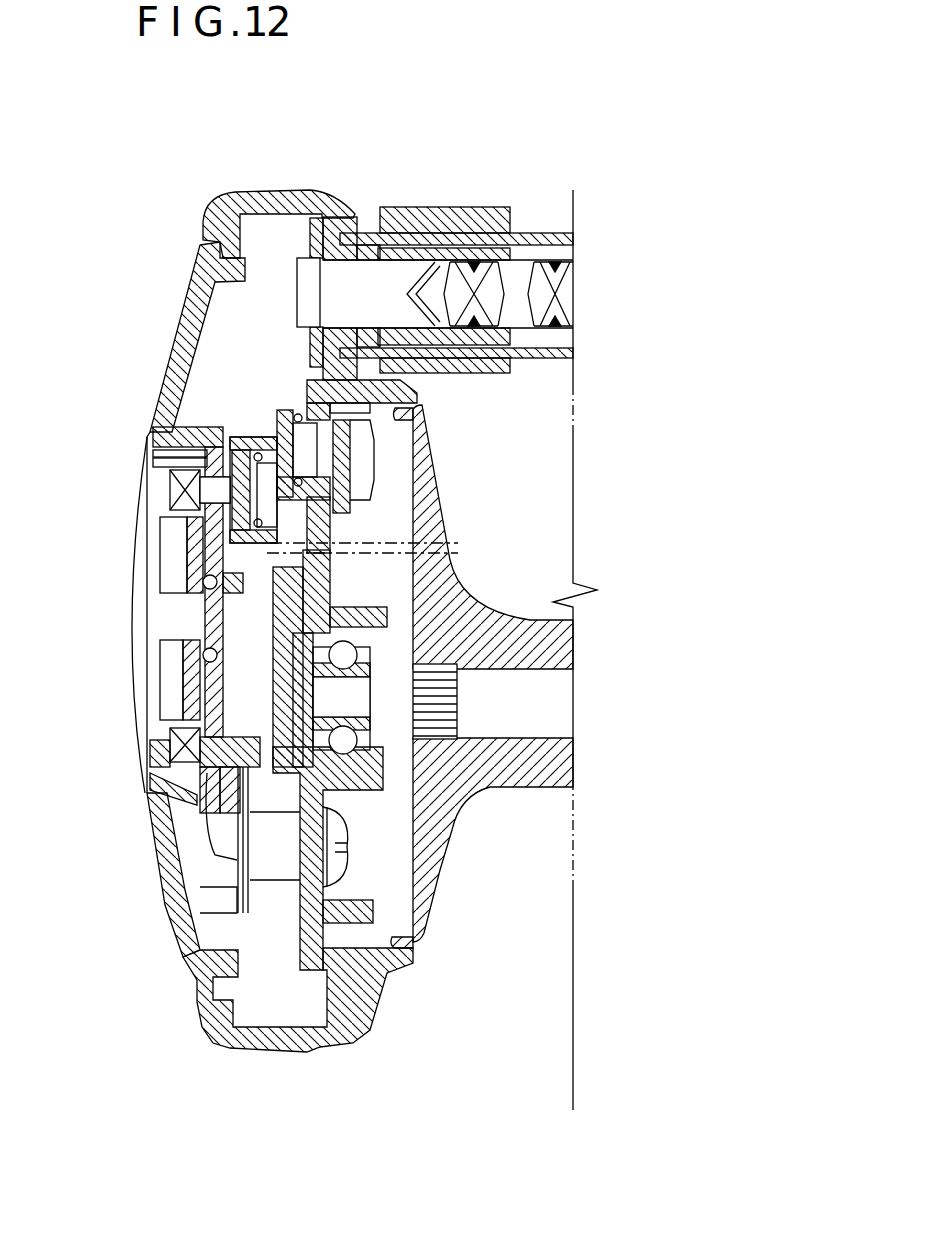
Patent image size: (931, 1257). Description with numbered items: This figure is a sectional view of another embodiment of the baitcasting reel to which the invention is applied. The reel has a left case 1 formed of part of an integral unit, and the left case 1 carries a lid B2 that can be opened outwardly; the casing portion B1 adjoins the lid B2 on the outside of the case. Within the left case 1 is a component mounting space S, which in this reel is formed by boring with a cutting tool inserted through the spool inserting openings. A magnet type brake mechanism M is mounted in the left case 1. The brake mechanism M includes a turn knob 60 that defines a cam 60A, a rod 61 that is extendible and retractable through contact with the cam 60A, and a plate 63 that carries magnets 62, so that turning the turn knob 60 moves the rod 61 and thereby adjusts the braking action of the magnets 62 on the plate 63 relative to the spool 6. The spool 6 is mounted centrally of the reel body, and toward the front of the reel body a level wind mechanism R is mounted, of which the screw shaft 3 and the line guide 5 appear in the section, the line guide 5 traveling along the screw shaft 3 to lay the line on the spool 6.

The left case 1 is at (320, 184).
The screw shaft 3 is at (568, 300).
The line guide 5 is at (427, 190).
The spool 6 is at (533, 780).
The turn knob 60 is at (153, 713).
The cam 60A is at (180, 765).
The rod 61 is at (297, 442).
The magnets 62 is at (370, 487).
The plate 63 is at (345, 500).
The first casing member B1 is at (268, 187).
The lid B2 is at (185, 285).
The magnet type brake mechanism M is at (217, 398).
The level wind mechanism R is at (517, 180).
The component mounting space S is at (275, 1015).